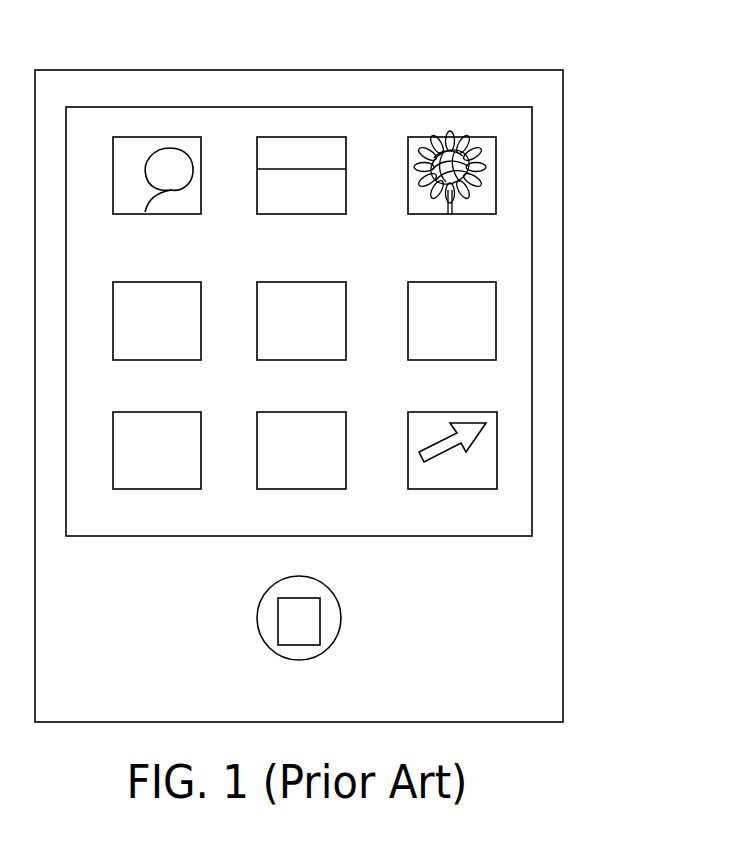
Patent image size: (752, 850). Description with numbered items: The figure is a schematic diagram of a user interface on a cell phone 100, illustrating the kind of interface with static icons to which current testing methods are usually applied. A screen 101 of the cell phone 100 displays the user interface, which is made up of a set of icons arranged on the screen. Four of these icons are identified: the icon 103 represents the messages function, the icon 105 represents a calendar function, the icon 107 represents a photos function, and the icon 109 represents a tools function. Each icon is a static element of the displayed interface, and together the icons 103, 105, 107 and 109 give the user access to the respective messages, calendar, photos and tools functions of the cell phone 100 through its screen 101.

The cell phone 100 is at (565, 88).
The screen 101 is at (532, 220).
The icon 103 is at (160, 137).
The icon 105 is at (305, 137).
The icon 107 is at (450, 137).
The icon 109 is at (497, 452).